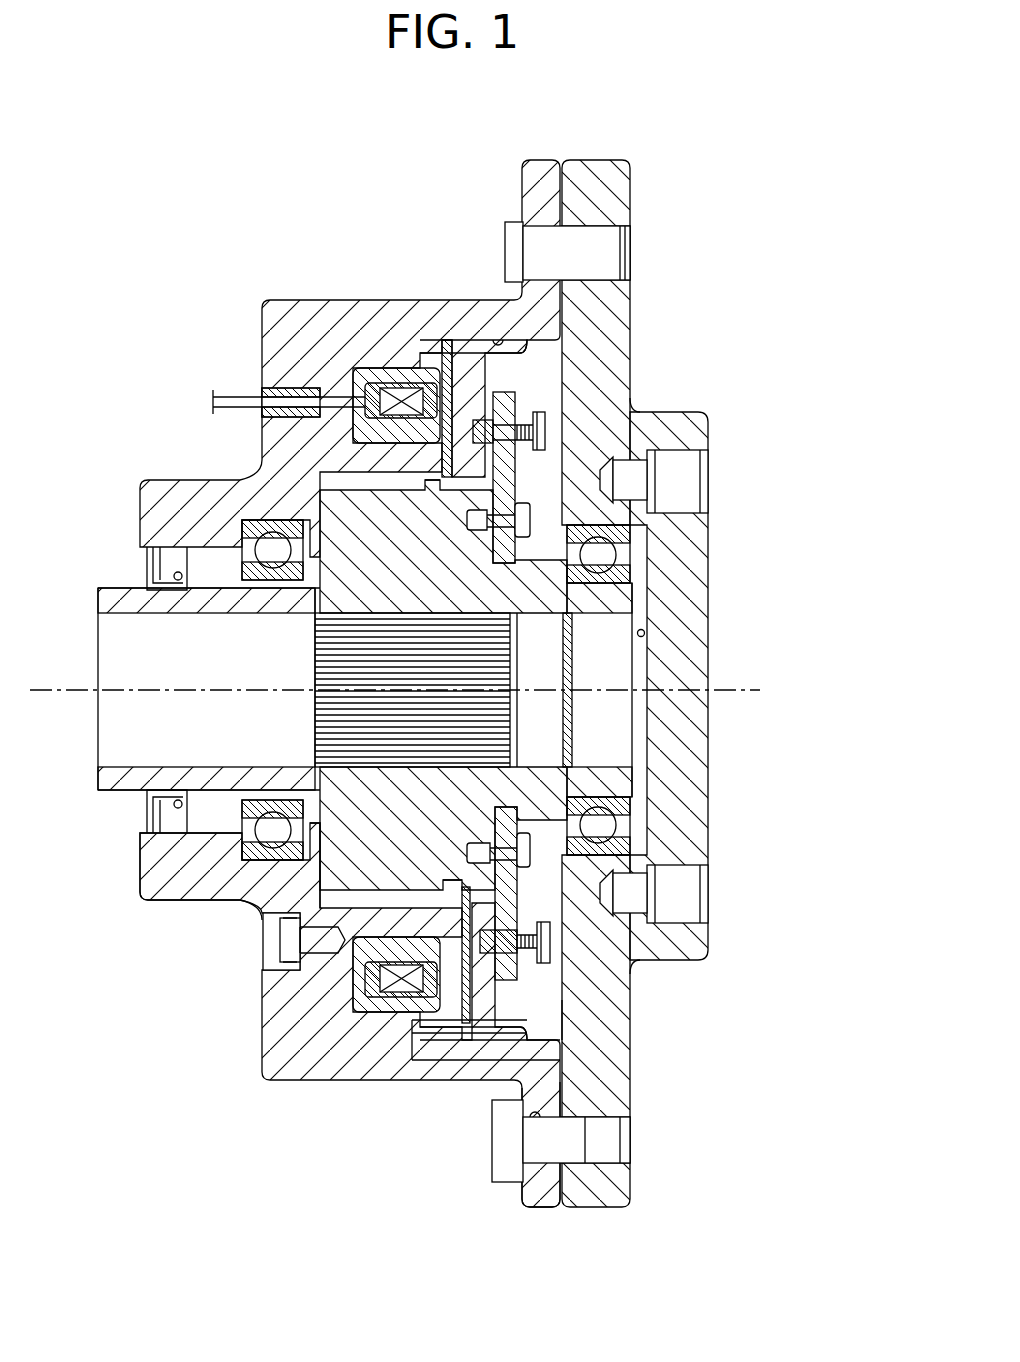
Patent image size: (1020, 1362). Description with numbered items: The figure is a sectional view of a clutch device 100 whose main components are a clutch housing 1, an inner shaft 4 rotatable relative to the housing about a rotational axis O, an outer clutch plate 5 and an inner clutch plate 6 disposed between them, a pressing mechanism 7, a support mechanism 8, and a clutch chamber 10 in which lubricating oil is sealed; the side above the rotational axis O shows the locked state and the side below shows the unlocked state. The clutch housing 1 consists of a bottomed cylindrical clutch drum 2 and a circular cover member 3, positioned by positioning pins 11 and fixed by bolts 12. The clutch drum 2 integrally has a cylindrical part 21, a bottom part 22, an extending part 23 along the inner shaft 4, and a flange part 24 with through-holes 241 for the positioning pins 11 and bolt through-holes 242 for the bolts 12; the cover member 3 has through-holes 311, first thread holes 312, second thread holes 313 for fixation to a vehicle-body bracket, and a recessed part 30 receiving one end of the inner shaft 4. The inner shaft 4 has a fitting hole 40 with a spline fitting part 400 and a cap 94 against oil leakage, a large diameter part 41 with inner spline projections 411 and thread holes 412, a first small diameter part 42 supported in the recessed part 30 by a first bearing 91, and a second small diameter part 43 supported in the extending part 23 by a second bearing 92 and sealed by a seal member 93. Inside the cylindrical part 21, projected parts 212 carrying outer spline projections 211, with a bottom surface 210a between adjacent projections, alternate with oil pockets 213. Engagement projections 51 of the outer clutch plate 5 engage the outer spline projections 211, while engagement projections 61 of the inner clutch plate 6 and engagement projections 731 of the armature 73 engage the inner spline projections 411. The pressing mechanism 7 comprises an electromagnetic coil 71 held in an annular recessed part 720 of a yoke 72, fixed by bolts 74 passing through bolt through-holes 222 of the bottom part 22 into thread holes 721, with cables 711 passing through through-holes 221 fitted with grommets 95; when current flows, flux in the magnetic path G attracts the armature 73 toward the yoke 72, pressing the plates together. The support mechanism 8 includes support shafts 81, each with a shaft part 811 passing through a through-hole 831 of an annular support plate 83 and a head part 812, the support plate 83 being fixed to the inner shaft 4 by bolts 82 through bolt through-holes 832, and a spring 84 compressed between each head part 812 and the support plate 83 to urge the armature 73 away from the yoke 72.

The clutch device 100 is at (210, 178).
The clutch housing 1 is at (626, 92).
The clutch drum 2 is at (548, 163).
The cover member 3 is at (587, 161).
The inner shaft 4 is at (637, 700).
The outer clutch plate 5 is at (545, 1050).
The inner clutch plate 6 is at (568, 1020).
The pressing mechanism 7 is at (515, 384).
The support mechanism 8 is at (615, 470).
The clutch chamber 10 is at (542, 985).
The positioning pins 11 is at (610, 252).
The bolts 12 is at (492, 1143).
The cylindrical part 21 is at (410, 1068).
The bottom part 22 is at (278, 1000).
The extending part 23 is at (182, 880).
The flange part 24 is at (540, 1197).
The recessed part 30 is at (646, 634).
The fitting hole 40 is at (182, 689).
The large diameter part 41 is at (375, 543).
The first small diameter part 42 is at (600, 600).
The second small diameter part 43 is at (203, 602).
The engagement projections 51 is at (447, 1035).
The engagement projections 61 is at (440, 885).
The electromagnetic coil 71 is at (390, 385).
The yoke 72 is at (418, 392).
The armature 73 is at (447, 343).
The bolts 74 is at (285, 952).
The support shafts 81 is at (718, 335).
The bolts 82 is at (549, 568).
The support plate 83 is at (508, 555).
The spring 84 is at (607, 900).
The first bearing 91 is at (612, 535).
The second bearing 92 is at (270, 533).
The seal member 93 is at (160, 568).
The cap 94 is at (573, 730).
The grommets 95 is at (280, 397).
The bottom surface 210a is at (494, 340).
The outer spline projections 211 is at (520, 352).
The projected parts 212 is at (545, 1062).
The oil pockets 213 is at (452, 1058).
The through-holes 221 is at (273, 420).
The bolt through-holes 222 is at (280, 938).
The through-holes 241 is at (533, 224).
The bolt through-holes 242 is at (523, 1163).
The through-holes 311 is at (616, 230).
The first thread holes 312 is at (603, 1135).
The second thread holes 313 is at (668, 505).
The spline fitting part 400 is at (335, 720).
The inner spline projections 411 is at (640, 410).
The thread holes 412 is at (655, 472).
The cables 711 is at (243, 400).
The annular recessed part 720 is at (316, 1010).
The thread holes 721 is at (300, 958).
The engagement projections 731 is at (466, 890).
The shaft part 811 is at (515, 430).
The head part 812 is at (543, 432).
The through-hole 831 is at (519, 940).
The bolt through-holes 832 is at (535, 858).
The magnetic path G is at (283, 390).
The rotational axis O is at (745, 689).